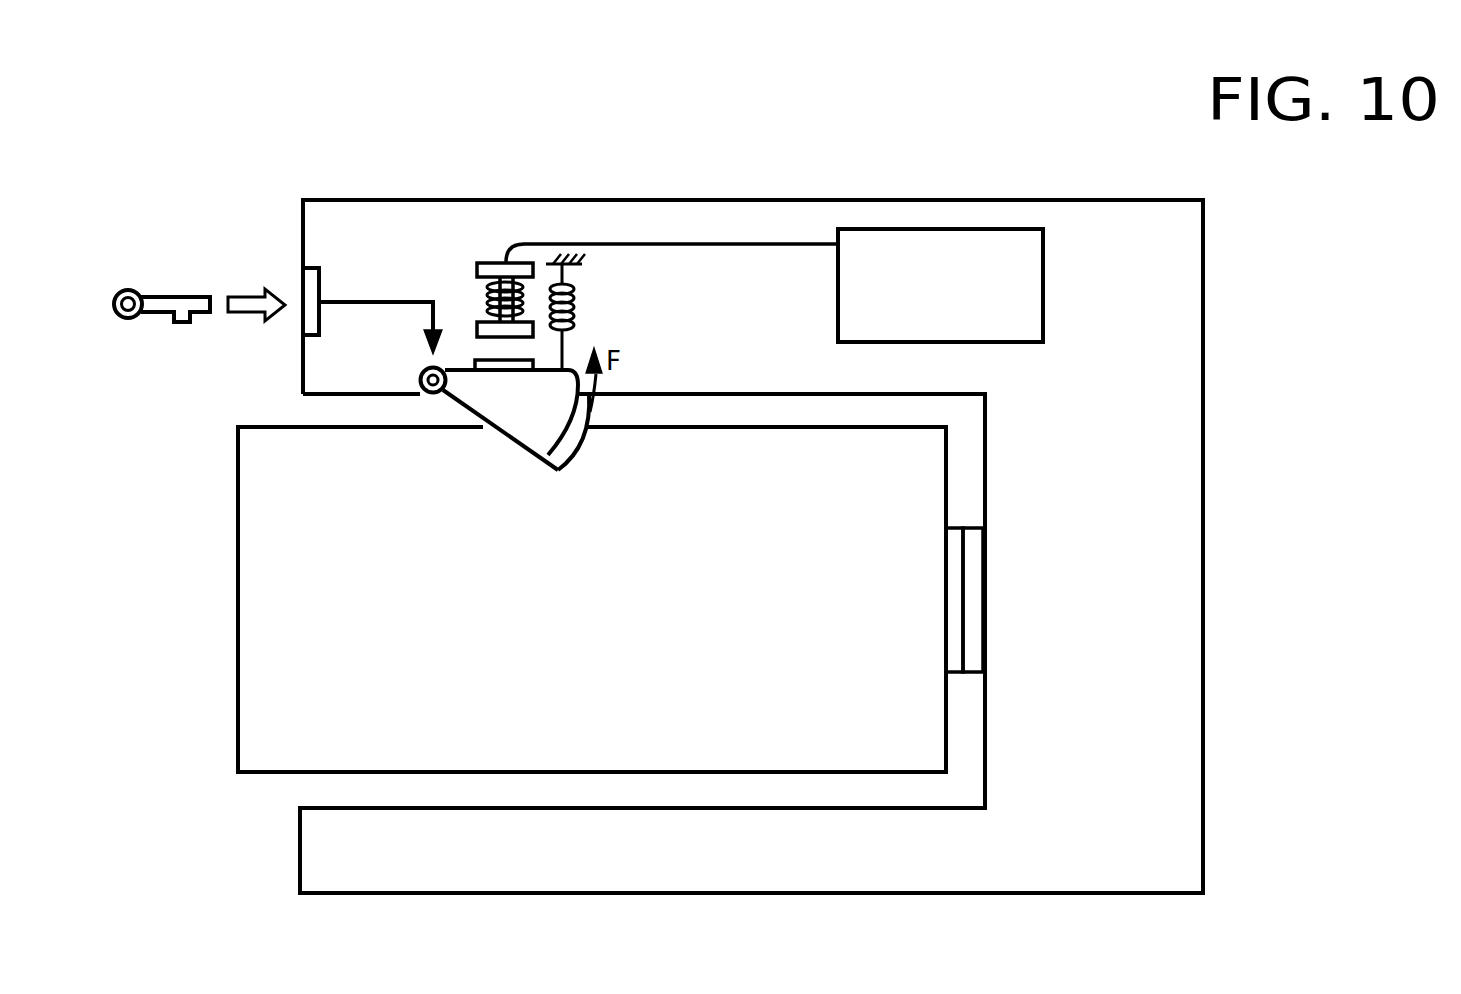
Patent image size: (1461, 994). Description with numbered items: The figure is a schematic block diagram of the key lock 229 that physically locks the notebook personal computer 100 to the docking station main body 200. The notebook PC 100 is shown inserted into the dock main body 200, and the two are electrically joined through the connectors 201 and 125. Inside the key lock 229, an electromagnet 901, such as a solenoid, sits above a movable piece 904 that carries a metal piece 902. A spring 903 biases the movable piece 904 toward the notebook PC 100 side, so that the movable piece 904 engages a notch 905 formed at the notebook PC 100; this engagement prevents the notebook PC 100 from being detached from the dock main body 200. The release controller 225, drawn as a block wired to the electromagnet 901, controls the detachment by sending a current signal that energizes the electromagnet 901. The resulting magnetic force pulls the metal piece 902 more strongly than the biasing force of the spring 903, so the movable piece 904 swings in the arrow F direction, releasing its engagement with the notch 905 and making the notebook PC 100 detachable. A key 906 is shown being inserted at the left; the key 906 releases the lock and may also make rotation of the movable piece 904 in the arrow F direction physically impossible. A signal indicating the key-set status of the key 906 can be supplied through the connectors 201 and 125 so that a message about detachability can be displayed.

The notebook personal computer 100 is at (245, 692).
The connector 125 is at (952, 597).
The docking station main body 200 is at (1162, 678).
The connector 201 is at (970, 597).
The release controller 225 is at (953, 229).
The key lock 229 is at (393, 213).
The electromagnet 901 is at (488, 263).
The metal piece 902 is at (490, 372).
The spring 903 is at (575, 295).
The movable piece 904 is at (505, 418).
The notch 905 is at (556, 468).
The key 906 is at (177, 300).